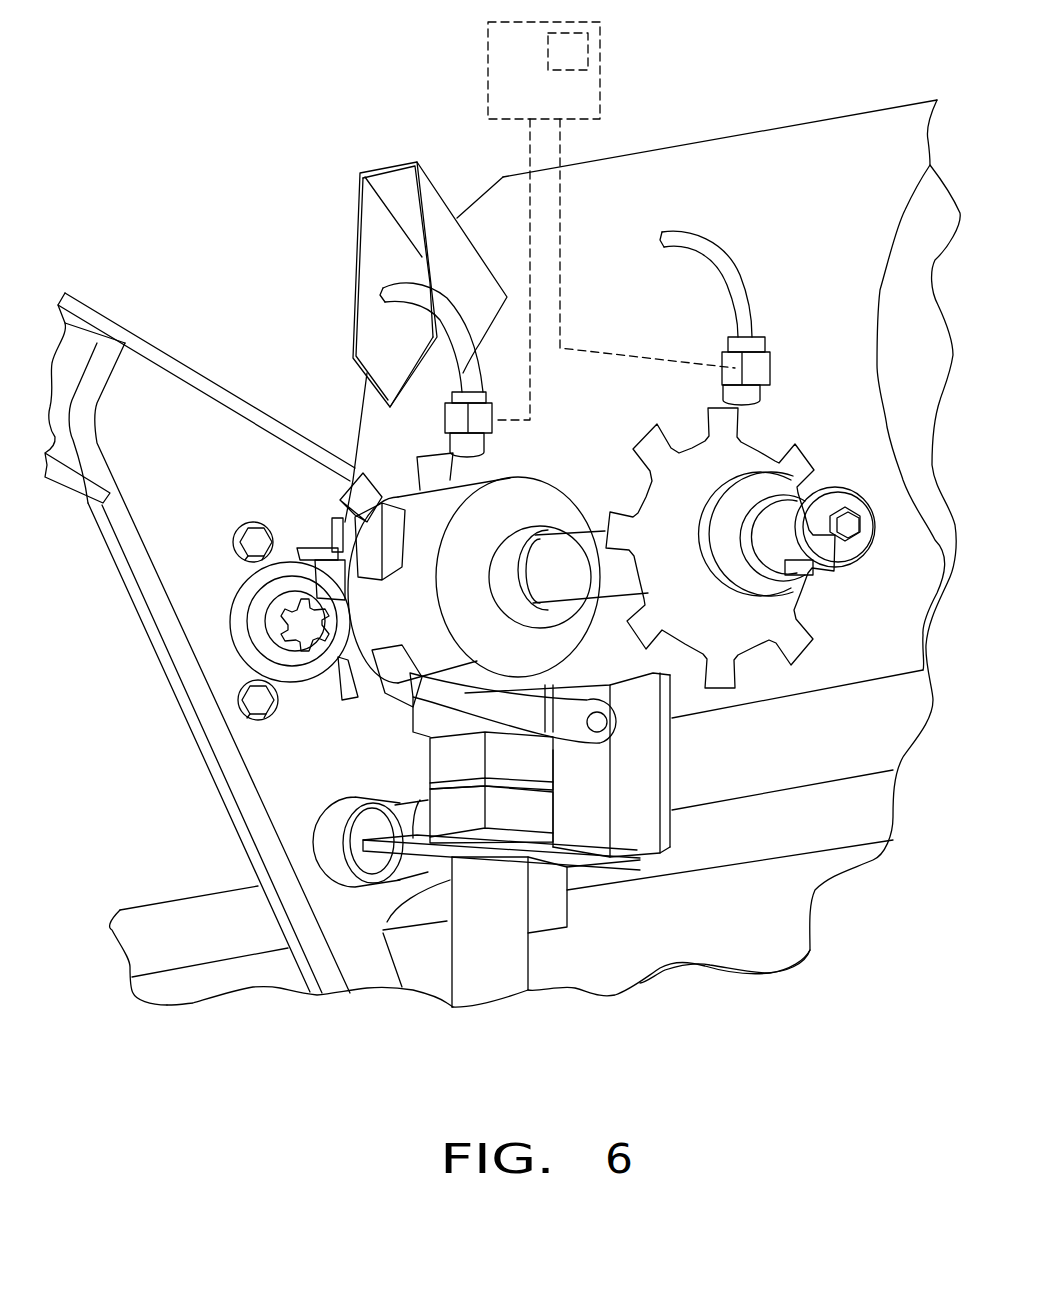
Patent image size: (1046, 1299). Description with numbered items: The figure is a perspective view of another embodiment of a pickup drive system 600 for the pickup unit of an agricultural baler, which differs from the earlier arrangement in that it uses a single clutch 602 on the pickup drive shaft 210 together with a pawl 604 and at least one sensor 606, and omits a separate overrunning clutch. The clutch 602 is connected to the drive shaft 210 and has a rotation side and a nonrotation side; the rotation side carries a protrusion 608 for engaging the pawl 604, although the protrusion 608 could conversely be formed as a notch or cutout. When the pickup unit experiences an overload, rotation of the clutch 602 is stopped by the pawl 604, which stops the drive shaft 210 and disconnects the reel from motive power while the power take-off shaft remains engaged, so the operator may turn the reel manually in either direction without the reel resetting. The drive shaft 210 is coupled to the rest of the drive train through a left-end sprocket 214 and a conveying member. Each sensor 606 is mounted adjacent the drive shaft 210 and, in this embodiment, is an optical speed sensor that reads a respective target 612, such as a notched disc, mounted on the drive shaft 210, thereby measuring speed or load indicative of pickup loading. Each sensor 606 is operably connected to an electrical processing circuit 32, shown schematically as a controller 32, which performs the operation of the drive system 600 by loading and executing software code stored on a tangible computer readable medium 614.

The pickup drive system 600 is at (260, 350).
The electrical processing circuit 32 is at (602, 82).
The tangible computer readable medium 614 is at (588, 53).
The sensor 606 is at (455, 423).
The clutch 602 is at (355, 628).
The pickup drive shaft 210 is at (613, 592).
The target 612 is at (345, 495).
The protrusion 608 is at (345, 600).
The left-end sprocket 214 is at (320, 627).
The pawl 604 is at (410, 705).